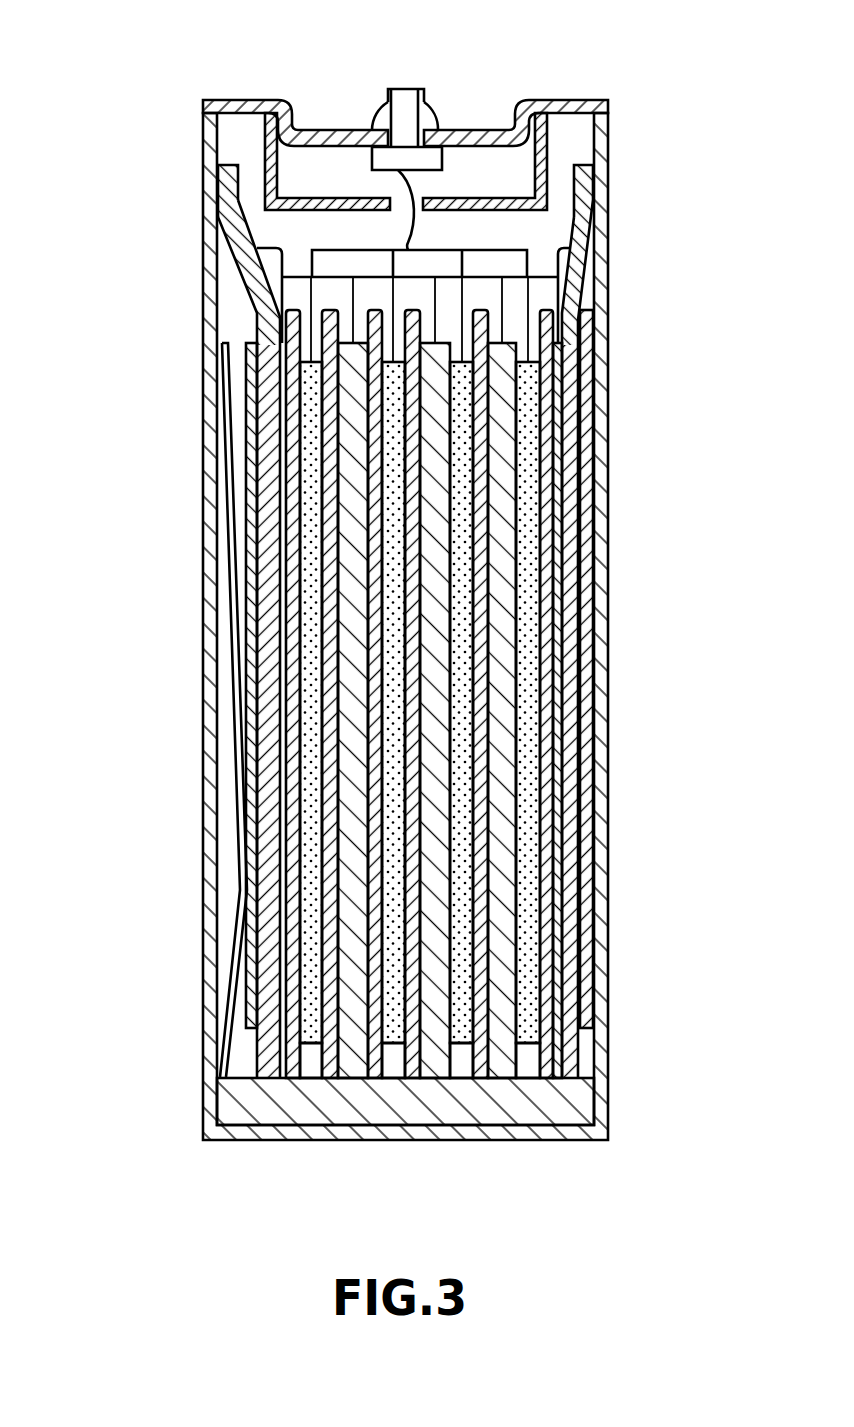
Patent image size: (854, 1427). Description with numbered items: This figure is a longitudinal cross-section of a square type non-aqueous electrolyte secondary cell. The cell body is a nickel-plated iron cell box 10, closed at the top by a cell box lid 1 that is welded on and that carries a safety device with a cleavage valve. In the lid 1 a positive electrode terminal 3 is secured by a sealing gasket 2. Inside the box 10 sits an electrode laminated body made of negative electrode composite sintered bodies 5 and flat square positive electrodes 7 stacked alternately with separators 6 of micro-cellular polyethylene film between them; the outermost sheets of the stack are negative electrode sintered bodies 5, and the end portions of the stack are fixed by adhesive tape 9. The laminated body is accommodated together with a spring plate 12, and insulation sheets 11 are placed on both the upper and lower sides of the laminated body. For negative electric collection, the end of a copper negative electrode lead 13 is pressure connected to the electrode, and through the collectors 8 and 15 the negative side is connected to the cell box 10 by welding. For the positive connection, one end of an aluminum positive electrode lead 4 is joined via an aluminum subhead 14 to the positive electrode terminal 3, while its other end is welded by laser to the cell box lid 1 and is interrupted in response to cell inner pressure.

The cell box lid 1 is at (553, 100).
The sealing gasket 2 is at (427, 125).
The positive electrode terminal 3 is at (403, 88).
The positive electrode lead 4 is at (527, 257).
The negative electrode composite sintered body 5 is at (497, 437).
The separator 6 is at (480, 515).
The positive electrode 7 is at (530, 585).
The collector 8 is at (568, 695).
The adhesive tape 9 is at (590, 762).
The cell box 10 is at (597, 852).
The insulation sheet 11 is at (540, 138).
The spring plate 12 is at (237, 612).
The negative electrode lead 13 is at (237, 168).
The aluminum subhead 14 is at (412, 192).
The collector 15 is at (250, 273).